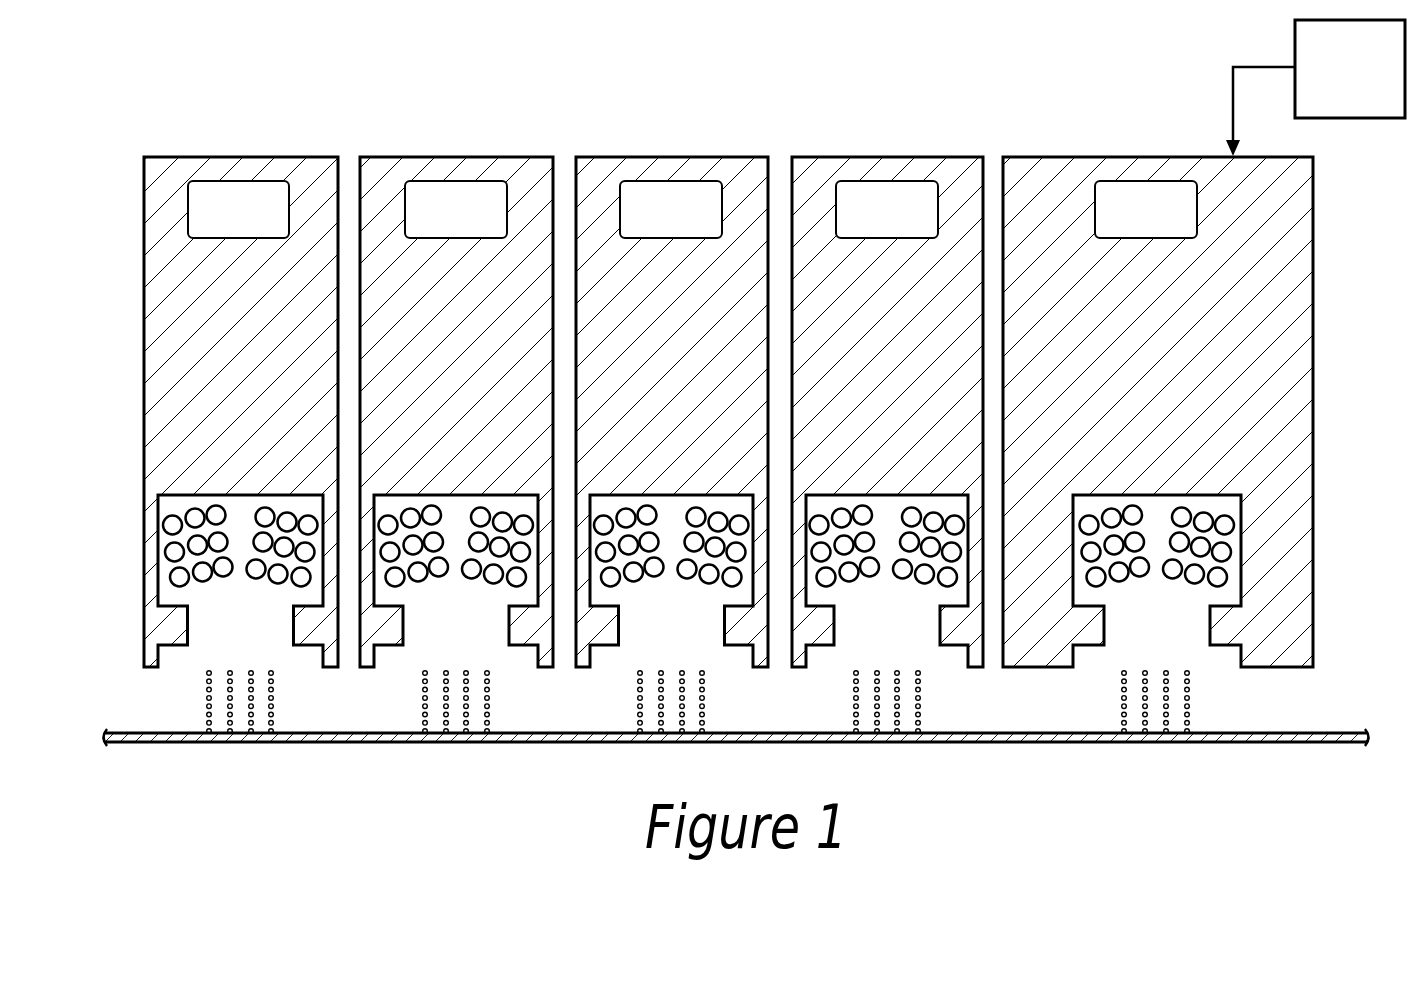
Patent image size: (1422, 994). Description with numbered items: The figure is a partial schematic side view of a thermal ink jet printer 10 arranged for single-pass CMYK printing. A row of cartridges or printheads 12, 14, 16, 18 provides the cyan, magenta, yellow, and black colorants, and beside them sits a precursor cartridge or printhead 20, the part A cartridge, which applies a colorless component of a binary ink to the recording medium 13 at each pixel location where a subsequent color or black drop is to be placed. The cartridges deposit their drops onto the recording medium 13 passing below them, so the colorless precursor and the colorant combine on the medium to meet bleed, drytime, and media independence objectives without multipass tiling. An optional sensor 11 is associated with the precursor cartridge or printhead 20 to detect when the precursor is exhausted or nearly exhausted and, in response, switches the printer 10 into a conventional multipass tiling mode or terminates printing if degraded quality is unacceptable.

The thermal ink jet printer 10 is at (100, 295).
The sensor 11 is at (1357, 118).
The cartridge or printhead 12 is at (217, 160).
The recording medium 13 is at (560, 742).
The cartridge or printhead 14 is at (415, 160).
The cartridge or printhead 16 is at (627, 160).
The cartridge or printhead 18 is at (860, 160).
The precursor cartridge or printhead 20 is at (1095, 160).